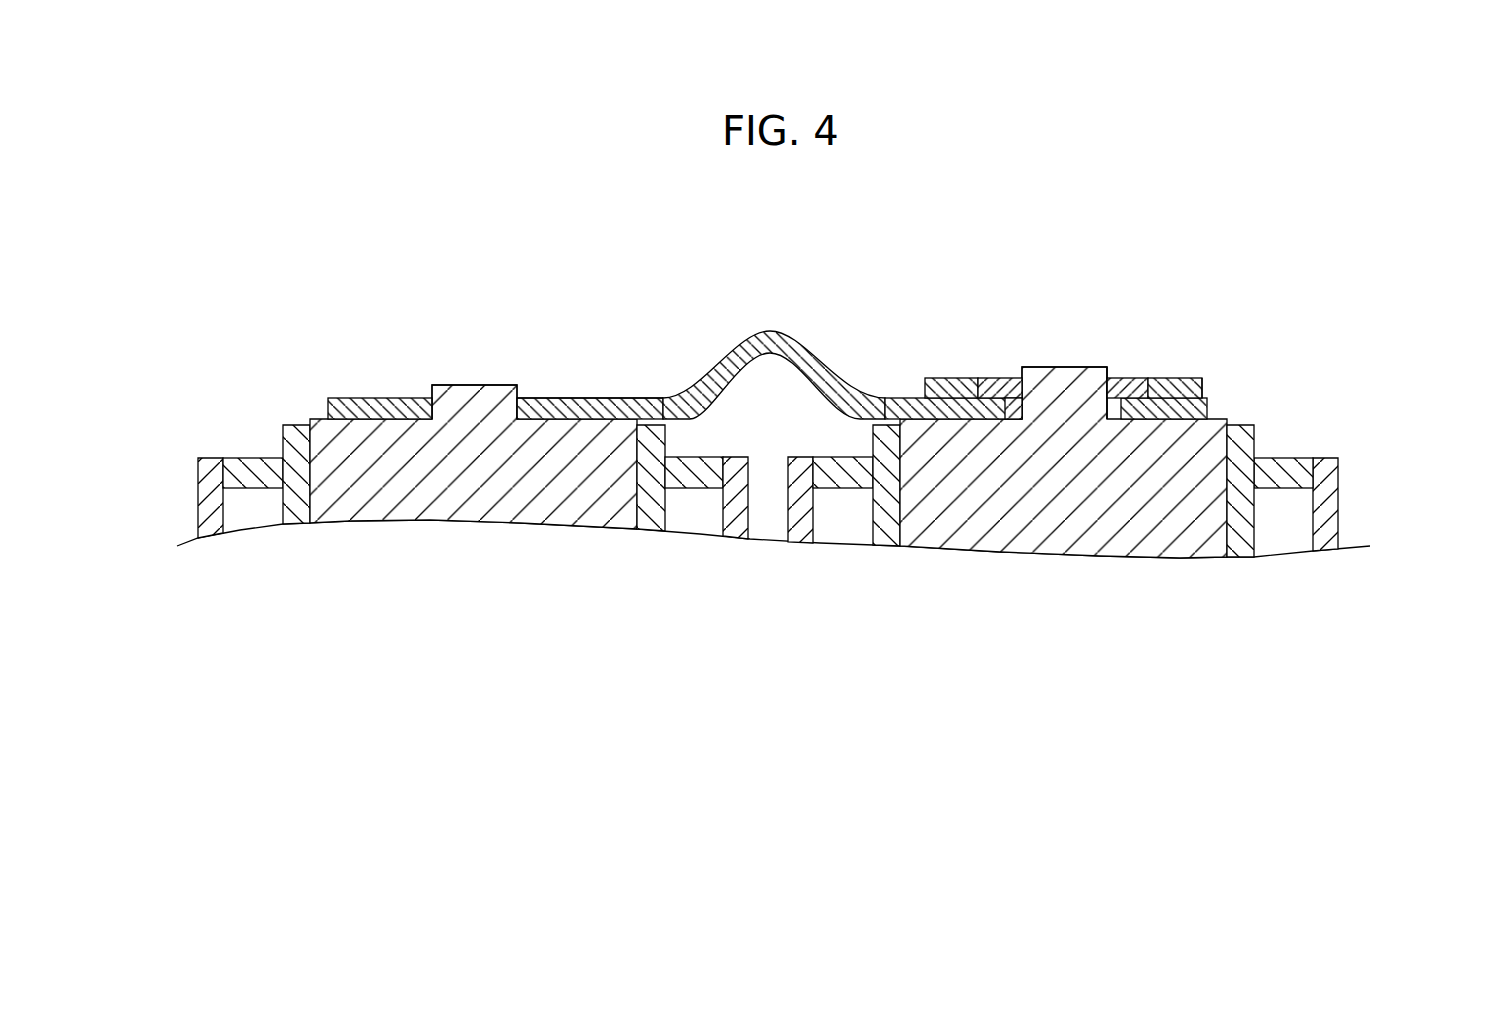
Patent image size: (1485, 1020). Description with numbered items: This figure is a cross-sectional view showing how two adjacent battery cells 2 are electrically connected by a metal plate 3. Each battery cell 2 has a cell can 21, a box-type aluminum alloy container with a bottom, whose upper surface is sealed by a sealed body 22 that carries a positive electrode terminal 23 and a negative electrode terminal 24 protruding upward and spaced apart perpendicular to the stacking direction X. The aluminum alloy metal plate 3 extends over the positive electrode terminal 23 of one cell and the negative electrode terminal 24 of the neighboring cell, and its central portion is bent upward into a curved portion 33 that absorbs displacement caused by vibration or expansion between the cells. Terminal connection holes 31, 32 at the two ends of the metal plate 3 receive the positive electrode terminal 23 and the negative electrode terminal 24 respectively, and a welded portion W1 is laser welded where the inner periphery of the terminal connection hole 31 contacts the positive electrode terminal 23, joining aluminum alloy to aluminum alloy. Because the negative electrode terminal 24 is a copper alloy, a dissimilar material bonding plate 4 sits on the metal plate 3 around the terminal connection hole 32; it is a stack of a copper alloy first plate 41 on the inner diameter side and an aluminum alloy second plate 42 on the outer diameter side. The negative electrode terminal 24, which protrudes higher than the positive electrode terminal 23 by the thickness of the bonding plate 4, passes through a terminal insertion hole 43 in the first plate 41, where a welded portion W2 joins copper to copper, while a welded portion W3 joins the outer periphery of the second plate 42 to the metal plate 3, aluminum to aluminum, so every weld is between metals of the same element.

The battery cell 2 is at (176, 518).
The cell can 21 is at (198, 470).
The sealed body 22 is at (257, 458).
The positive electrode terminal 23 is at (477, 390).
The negative electrode terminal 24 is at (1065, 367).
The metal plate 3 is at (696, 288).
The terminal connection hole 31 is at (438, 403).
The terminal connection hole 32 is at (1117, 412).
The curved portion 33 is at (778, 333).
The dissimilar material bonding plate 4 is at (1240, 352).
The first plate 41 is at (1135, 378).
The second plate 42 is at (955, 378).
The terminal insertion hole 43 is at (1015, 378).
The welded portion W1 is at (523, 398).
The welded portion W2 is at (1107, 368).
The welded portion W3 is at (1202, 387).
The stacking direction X is at (853, 607).